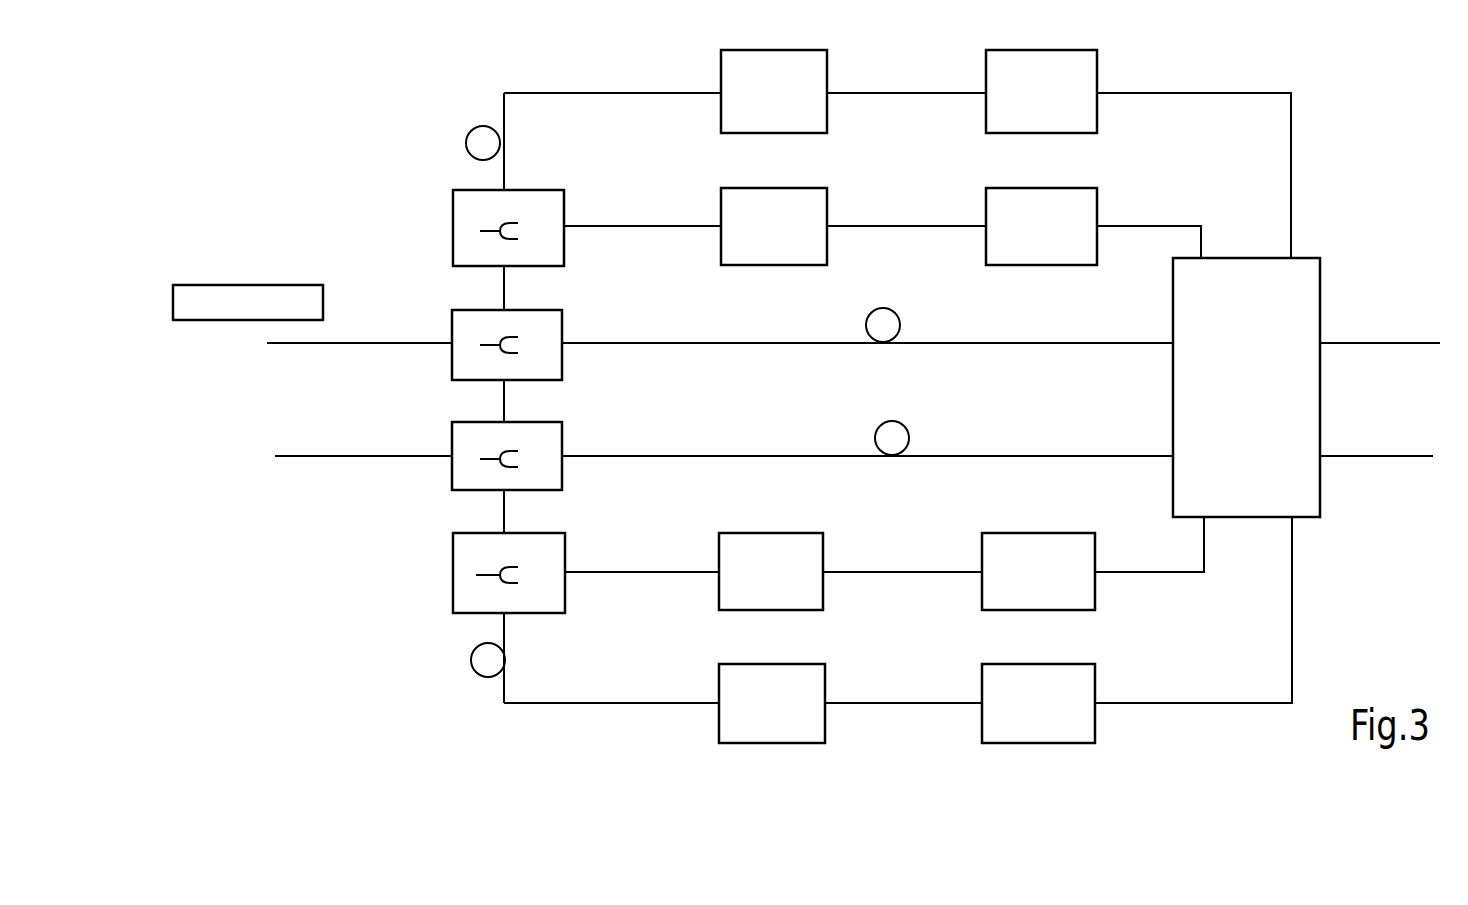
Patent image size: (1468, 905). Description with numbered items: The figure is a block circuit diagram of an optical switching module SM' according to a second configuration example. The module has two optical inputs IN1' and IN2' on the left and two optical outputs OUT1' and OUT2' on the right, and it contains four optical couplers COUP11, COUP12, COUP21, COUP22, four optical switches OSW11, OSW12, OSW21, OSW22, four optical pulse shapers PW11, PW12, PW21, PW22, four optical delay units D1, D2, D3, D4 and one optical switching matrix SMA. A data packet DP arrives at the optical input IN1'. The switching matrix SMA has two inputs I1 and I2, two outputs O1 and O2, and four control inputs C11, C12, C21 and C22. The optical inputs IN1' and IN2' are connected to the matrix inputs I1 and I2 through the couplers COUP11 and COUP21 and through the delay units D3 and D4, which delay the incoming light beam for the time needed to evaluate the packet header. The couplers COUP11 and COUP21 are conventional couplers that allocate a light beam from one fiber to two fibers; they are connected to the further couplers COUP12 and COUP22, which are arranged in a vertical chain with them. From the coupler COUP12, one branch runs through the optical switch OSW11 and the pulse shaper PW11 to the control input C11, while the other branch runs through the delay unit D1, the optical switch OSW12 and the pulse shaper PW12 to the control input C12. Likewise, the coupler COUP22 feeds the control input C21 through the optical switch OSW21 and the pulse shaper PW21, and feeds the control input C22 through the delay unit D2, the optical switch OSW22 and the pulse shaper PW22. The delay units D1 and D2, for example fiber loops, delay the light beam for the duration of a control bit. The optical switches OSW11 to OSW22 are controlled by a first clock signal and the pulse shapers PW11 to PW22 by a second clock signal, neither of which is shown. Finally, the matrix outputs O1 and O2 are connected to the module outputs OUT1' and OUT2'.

The optical coupler COUP12 is at (461, 228).
The optical coupler COUP11 is at (457, 334).
The optical coupler COUP21 is at (463, 453).
The optical coupler COUP22 is at (454, 573).
The optical switch OSW12 is at (774, 91).
The optical switch OSW11 is at (774, 226).
The optical switch OSW21 is at (771, 571).
The optical switch OSW22 is at (772, 703).
The optical pulse shaper PW12 is at (1041, 91).
The optical pulse shaper PW11 is at (1041, 226).
The optical pulse shaper PW21 is at (1038, 571).
The optical pulse shaper PW22 is at (1038, 703).
The optical switching matrix SMA is at (1246, 387).
The data packet DP is at (248, 282).
The optical delay unit D1 is at (484, 126).
The optical delay unit D2 is at (477, 672).
The optical delay unit D3 is at (898, 313).
The optical delay unit D4 is at (907, 427).
The optical input IN1' is at (327, 363).
The optical input IN2' is at (327, 478).
The optical output OUT1' is at (1387, 325).
The optical output OUT2' is at (1387, 438).
The input of optical switching matrix I1 is at (1136, 325).
The input of optical switching matrix I2 is at (1136, 438).
The output of optical switching matrix O1 is at (1350, 325).
The output of optical switching matrix O2 is at (1350, 438).
The control input C11 is at (1171, 236).
The control input C12 is at (1218, 175).
The control input C21 is at (1170, 544).
The control input C22 is at (1216, 610).
The optical switching module SM' is at (1327, 132).